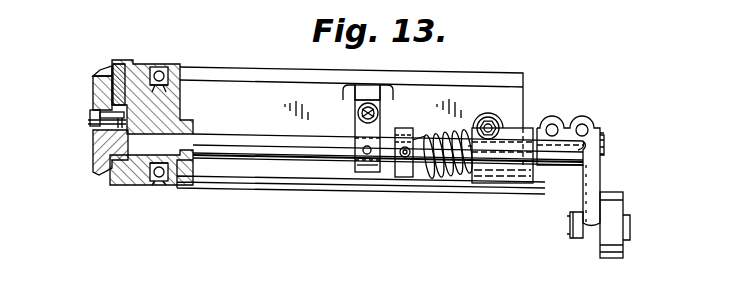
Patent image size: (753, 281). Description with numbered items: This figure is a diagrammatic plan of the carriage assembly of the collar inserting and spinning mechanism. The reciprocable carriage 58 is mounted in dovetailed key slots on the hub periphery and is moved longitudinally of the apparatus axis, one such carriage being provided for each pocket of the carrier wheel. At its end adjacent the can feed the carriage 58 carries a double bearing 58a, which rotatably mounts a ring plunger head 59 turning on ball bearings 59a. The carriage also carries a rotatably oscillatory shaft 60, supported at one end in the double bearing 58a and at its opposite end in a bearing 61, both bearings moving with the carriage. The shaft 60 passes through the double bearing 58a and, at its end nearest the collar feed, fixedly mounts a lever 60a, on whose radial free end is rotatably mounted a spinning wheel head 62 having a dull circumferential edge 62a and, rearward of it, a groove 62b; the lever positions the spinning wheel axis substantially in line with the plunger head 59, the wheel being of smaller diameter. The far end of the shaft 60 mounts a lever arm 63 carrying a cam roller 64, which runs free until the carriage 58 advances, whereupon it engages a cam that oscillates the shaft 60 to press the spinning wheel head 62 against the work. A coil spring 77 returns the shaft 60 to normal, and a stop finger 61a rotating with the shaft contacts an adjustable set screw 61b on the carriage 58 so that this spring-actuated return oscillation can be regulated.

The reciprocable carriage 58 is at (513, 103).
The double bearing 58a is at (216, 103).
The ring plunger head 59 is at (143, 186).
The ball bearings 59a is at (180, 186).
The rotatably oscillatory shaft 60 is at (223, 140).
The lever 60a is at (117, 109).
The bearing 61 is at (502, 172).
The stop finger 61a is at (360, 131).
The adjustable set screw 61b is at (357, 113).
The spinning wheel head 62 is at (97, 92).
The dull circumferential edge 62a is at (110, 75).
The groove 62b is at (118, 64).
The lever arm 63 is at (593, 181).
The cam roller 64 is at (615, 203).
The coil spring 77 is at (436, 132).